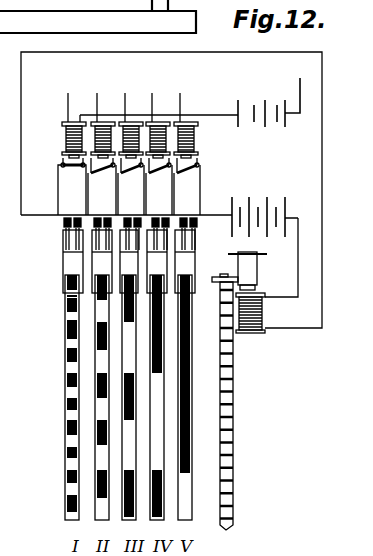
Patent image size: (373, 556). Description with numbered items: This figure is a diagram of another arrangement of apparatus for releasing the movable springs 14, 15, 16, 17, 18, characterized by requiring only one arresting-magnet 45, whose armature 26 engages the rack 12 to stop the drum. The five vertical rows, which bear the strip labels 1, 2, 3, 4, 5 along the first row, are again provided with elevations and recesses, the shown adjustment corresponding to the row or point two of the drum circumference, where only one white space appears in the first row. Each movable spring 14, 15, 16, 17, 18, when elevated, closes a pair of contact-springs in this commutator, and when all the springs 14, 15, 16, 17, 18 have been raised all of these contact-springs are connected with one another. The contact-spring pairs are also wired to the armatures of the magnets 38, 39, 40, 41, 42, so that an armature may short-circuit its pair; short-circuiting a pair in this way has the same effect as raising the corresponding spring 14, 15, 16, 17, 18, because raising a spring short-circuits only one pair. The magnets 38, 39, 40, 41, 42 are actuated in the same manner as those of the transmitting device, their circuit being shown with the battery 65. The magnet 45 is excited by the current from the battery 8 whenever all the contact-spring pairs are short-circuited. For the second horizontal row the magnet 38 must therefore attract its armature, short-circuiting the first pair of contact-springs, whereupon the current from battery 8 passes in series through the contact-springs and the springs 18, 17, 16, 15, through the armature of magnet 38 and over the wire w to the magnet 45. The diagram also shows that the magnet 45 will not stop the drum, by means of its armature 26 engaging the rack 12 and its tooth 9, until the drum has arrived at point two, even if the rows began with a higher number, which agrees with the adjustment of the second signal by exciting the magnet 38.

The magnet 38 is at (69, 122).
The magnet 39 is at (101, 122).
The magnet 40 is at (131, 122).
The magnet 41 is at (154, 122).
The magnet 42 is at (186, 122).
The battery 65 is at (266, 101).
The battery 8 is at (265, 205).
The wire w is at (21, 107).
The movable spring 14 is at (73, 388).
The movable spring 15 is at (102, 388).
The movable spring 16 is at (129, 388).
The movable spring 17 is at (157, 388).
The movable spring 18 is at (185, 388).
The tape section 1 is at (65, 282).
The row or point 2 is at (65, 296).
The tape section 3 is at (65, 310).
The tape section 4 is at (65, 324).
The tape section 5 is at (65, 338).
The armature 26 is at (252, 268).
The arresting-magnet 45 is at (262, 313).
The rack 12 is at (235, 383).
The rack tooth 9 is at (235, 434).